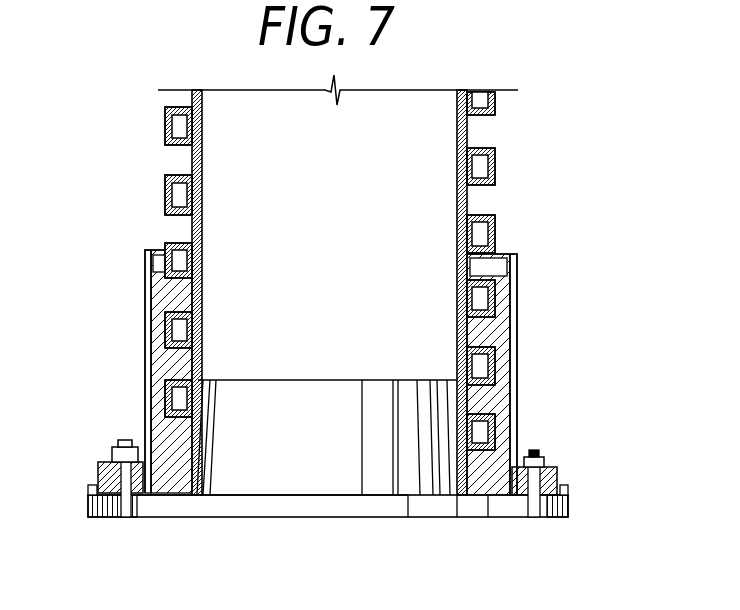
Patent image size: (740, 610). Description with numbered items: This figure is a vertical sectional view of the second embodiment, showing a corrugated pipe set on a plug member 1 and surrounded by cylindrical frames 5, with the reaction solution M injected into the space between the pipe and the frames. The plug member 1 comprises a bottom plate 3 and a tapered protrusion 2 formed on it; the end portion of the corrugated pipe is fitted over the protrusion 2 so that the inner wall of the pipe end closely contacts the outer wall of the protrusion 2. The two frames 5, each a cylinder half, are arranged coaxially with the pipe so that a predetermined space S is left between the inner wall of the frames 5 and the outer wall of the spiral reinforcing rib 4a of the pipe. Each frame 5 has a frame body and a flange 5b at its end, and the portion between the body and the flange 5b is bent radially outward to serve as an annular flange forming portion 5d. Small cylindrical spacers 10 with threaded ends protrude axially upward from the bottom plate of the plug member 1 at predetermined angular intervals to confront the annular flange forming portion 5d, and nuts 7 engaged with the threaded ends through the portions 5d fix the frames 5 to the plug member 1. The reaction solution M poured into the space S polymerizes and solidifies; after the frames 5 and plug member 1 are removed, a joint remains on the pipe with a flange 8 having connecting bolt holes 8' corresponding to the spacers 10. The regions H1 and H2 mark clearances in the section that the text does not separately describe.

The plug member 1 is at (322, 520).
The protrusion 2 is at (305, 398).
The bottom plate 3 is at (243, 503).
The spiral reinforcing rib 4a is at (496, 220).
The frame 5 is at (522, 284).
The flange 5b is at (570, 489).
The annular flange forming portion 5d is at (110, 462).
The nut 7 is at (537, 452).
The flange 8 is at (327, 520).
The connecting bolt hole 8' is at (351, 521).
The spacer 10 is at (128, 490).
The gap H1 is at (513, 337).
The gap H2 is at (452, 455).
The reaction solution M is at (170, 297).
The space S is at (158, 252).